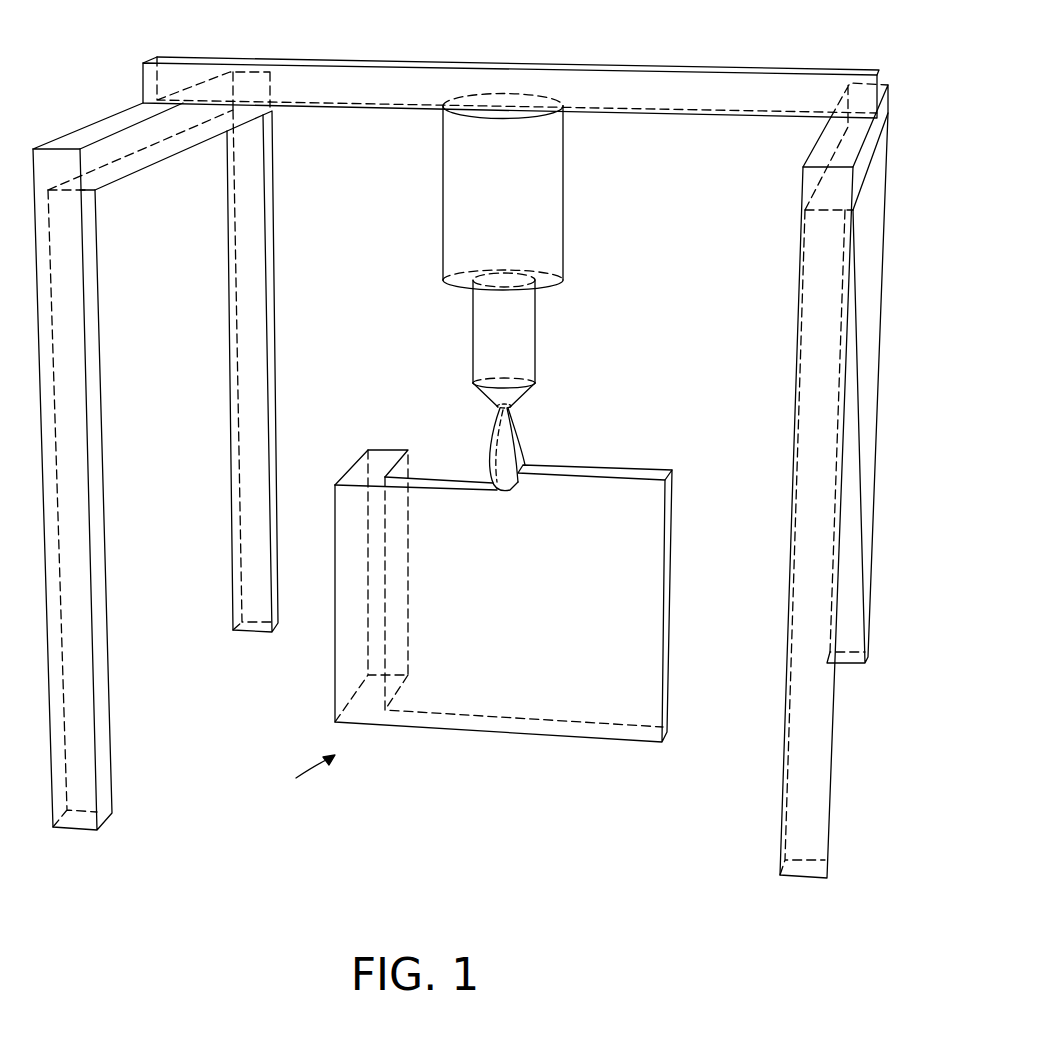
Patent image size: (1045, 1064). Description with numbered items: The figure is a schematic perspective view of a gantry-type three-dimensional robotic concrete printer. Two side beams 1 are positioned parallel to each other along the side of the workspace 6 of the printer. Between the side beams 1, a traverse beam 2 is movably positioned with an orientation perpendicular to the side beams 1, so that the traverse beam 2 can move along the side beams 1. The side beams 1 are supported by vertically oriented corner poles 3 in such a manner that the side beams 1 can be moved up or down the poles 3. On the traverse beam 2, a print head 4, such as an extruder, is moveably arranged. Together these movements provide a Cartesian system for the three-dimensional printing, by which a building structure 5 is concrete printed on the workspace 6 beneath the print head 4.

The side beam 1 is at (82, 128).
The traverse beam 2 is at (340, 78).
The corner pole 3 is at (868, 297).
The print head 4 is at (548, 226).
The building structure 5 is at (598, 510).
The workspace 6 is at (305, 774).